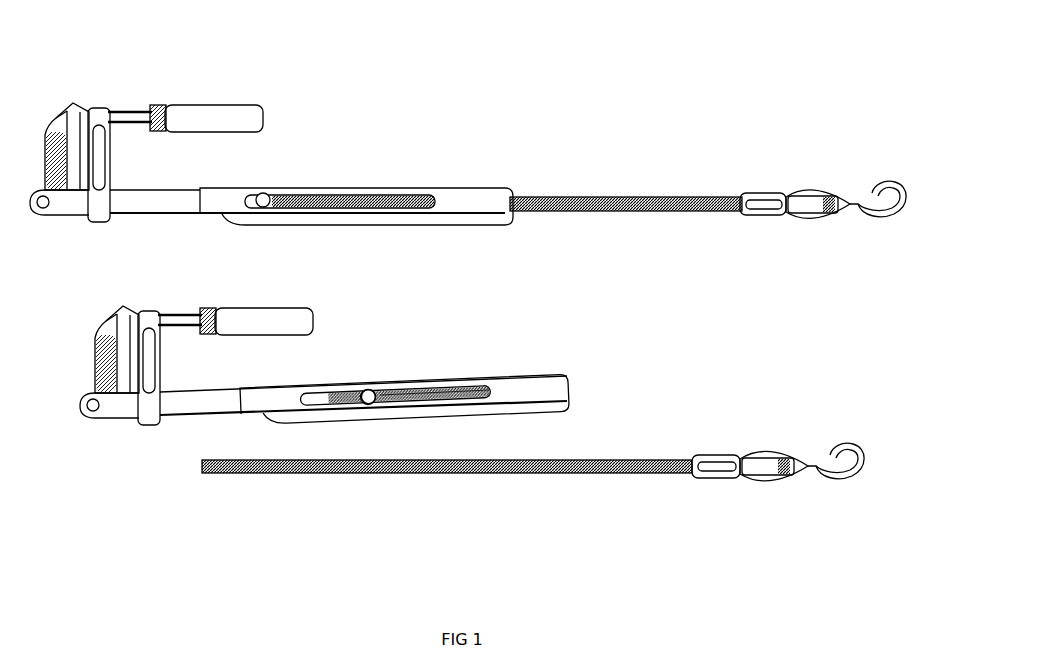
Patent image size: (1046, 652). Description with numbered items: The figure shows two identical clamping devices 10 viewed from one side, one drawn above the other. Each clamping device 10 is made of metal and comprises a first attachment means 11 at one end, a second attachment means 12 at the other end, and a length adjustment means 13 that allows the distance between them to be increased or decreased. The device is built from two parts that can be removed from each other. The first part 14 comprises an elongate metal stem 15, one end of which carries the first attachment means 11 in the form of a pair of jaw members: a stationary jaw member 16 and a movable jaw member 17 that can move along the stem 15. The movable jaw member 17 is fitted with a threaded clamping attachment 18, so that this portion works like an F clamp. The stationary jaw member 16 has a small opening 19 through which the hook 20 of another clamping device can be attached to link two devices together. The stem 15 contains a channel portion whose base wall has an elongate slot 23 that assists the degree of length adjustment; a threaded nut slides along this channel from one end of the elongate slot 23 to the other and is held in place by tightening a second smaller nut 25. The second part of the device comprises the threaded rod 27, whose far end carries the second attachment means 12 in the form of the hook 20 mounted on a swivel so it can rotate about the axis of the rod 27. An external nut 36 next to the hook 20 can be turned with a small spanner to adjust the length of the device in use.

The clamping device 10 is at (315, 165).
The first attachment means 11 is at (47, 108).
The second attachment means 12 is at (793, 173).
The length adjustment means 13 is at (372, 187).
The first part 14 is at (188, 447).
The stem 15 is at (266, 410).
The stationary jaw member 16 is at (90, 362).
The movable jaw member 17 is at (147, 402).
The threaded clamping attachment 18 is at (200, 335).
The small opening 19 is at (97, 413).
The hook 20 is at (832, 172).
The elongate slot 23 is at (415, 400).
The second smaller nut 25 is at (368, 403).
The threaded rod 27 is at (583, 193).
The external nut 36 is at (748, 190).